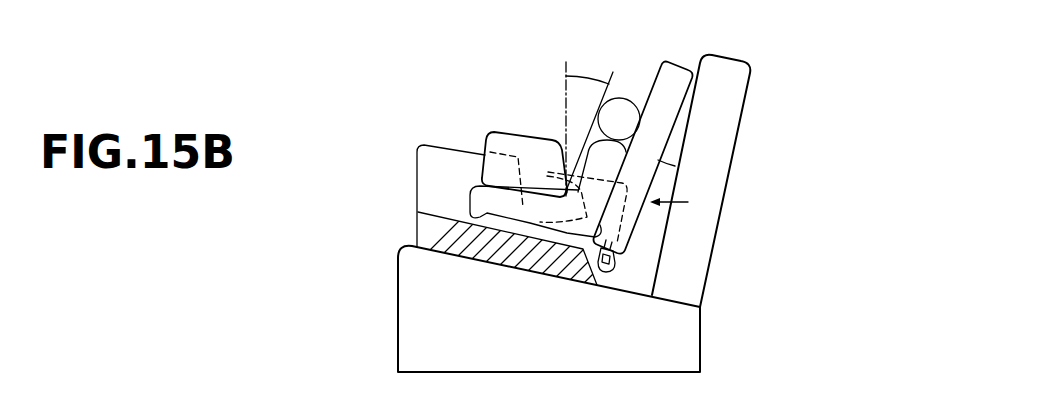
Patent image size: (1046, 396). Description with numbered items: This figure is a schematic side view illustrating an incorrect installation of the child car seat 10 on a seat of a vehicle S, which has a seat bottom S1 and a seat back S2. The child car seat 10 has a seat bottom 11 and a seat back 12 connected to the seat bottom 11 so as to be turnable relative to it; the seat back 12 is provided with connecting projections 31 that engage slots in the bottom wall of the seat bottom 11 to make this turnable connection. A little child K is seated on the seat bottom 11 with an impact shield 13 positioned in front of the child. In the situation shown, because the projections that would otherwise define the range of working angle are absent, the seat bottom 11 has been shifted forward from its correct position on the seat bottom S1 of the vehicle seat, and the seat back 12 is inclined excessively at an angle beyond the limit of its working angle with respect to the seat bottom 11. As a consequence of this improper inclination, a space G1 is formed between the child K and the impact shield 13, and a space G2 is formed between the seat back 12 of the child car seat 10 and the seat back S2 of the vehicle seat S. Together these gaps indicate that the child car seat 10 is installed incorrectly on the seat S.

The child car seat 10 is at (527, 184).
The seat bottom 11 is at (447, 219).
The seat back 12 is at (662, 70).
The impact shield 13 is at (507, 133).
The connecting projections 31 is at (606, 267).
The little child K is at (595, 148).
The space G1 is at (590, 118).
The space G2 is at (665, 160).
The seat of a vehicle S is at (570, 217).
The seat bottom S1 is at (410, 322).
The seat back S2 is at (727, 168).